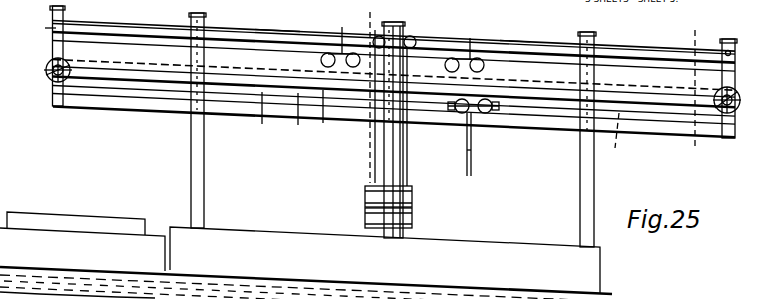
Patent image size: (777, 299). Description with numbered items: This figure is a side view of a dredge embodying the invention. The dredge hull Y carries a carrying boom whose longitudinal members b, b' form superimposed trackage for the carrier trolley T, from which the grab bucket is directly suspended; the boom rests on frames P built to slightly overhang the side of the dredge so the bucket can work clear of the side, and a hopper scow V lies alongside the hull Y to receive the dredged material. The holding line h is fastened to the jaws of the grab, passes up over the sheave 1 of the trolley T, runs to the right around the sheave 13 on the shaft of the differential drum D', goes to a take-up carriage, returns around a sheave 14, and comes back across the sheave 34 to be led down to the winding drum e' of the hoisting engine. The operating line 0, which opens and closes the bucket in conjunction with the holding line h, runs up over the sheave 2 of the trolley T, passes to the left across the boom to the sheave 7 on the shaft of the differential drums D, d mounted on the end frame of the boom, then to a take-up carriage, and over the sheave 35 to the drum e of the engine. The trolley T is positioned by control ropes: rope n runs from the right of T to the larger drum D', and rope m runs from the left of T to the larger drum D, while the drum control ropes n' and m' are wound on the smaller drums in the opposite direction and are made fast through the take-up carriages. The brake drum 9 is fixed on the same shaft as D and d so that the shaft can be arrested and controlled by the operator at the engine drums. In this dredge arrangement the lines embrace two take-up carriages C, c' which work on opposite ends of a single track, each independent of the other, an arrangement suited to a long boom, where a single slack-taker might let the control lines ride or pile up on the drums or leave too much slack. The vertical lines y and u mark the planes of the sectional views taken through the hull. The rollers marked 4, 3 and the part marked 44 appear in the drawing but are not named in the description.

The pivot pin at top of left post 44 is at (34, 28).
The sheave 7 is at (50, 70).
The brake drum 9 is at (52, 77).
The sheave 13 is at (738, 103).
The sheave 14 is at (731, 54).
The sheave 35 is at (379, 36).
The sheave 34 is at (416, 36).
The roller 4 is at (390, 55).
The roller 3 is at (415, 55).
The sheave 2 is at (460, 113).
The sheave 1 is at (492, 110).
The operating line 0 is at (296, 31).
The frames P is at (393, 126).
The smaller differential drum d is at (47, 63).
The differential drum D is at (43, 94).
The differential drum D' is at (736, 115).
The take-up carriage c' is at (340, 30).
The take-up carriage C is at (464, 38).
The carrier trolley T is at (475, 113).
The section line Y—Y y is at (343, 157).
The holding line h is at (481, 170).
The winding drum e is at (398, 196).
The winding drum e' is at (400, 219).
The section line U—U u is at (687, 93).
The control rope n is at (612, 138).
The drum control rope n' is at (515, 49).
The control rope m is at (253, 118).
The drum control rope m' is at (277, 39).
The longitudinal member b is at (295, 119).
The longitudinal member b' is at (321, 118).
The hopper scow V is at (82, 241).
The dredge hull Y is at (385, 260).